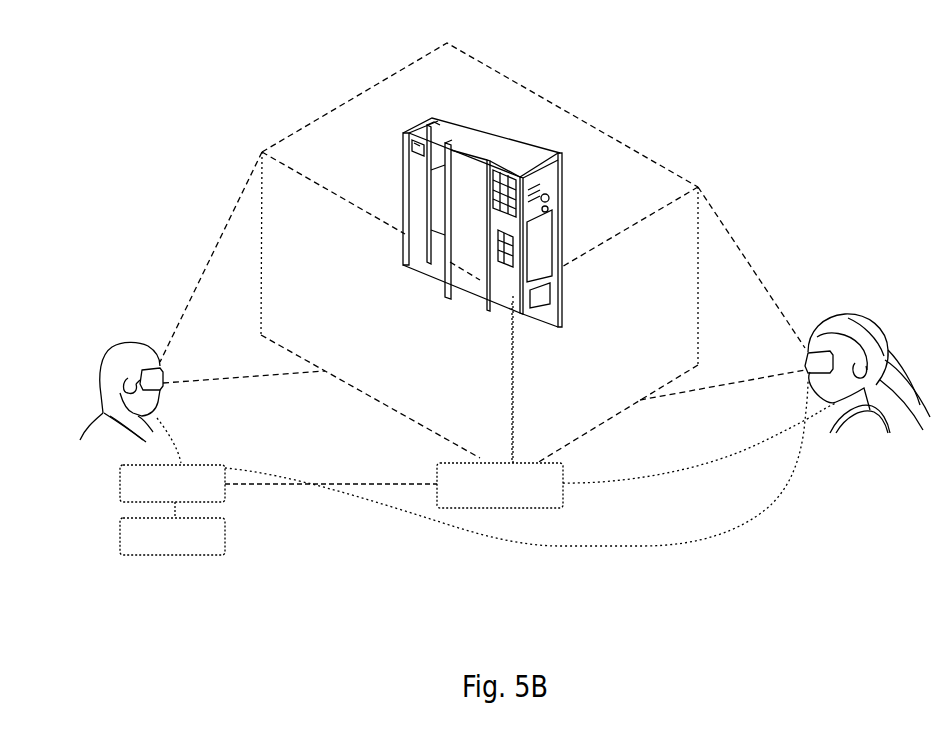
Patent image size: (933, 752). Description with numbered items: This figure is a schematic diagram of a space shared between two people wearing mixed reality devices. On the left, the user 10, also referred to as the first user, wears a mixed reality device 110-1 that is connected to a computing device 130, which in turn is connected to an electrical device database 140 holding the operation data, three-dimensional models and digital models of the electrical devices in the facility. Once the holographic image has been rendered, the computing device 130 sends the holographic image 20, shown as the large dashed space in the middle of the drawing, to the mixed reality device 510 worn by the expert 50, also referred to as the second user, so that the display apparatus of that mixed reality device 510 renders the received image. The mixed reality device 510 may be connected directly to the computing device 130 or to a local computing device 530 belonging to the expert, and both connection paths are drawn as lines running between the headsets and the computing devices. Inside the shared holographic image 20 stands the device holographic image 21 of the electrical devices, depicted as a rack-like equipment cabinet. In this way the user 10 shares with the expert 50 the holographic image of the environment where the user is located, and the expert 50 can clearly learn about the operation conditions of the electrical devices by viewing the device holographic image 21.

The holographic image 20 is at (268, 92).
The device holographic image 21 is at (455, 110).
The user 10 is at (111, 321).
The head-mounted display of first user 110-1 is at (142, 374).
The computing device 130 is at (216, 465).
The electrical device database 140 is at (217, 516).
The local computing device 530 is at (563, 463).
The expert 50 is at (866, 300).
The mixed reality device 510 is at (818, 350).